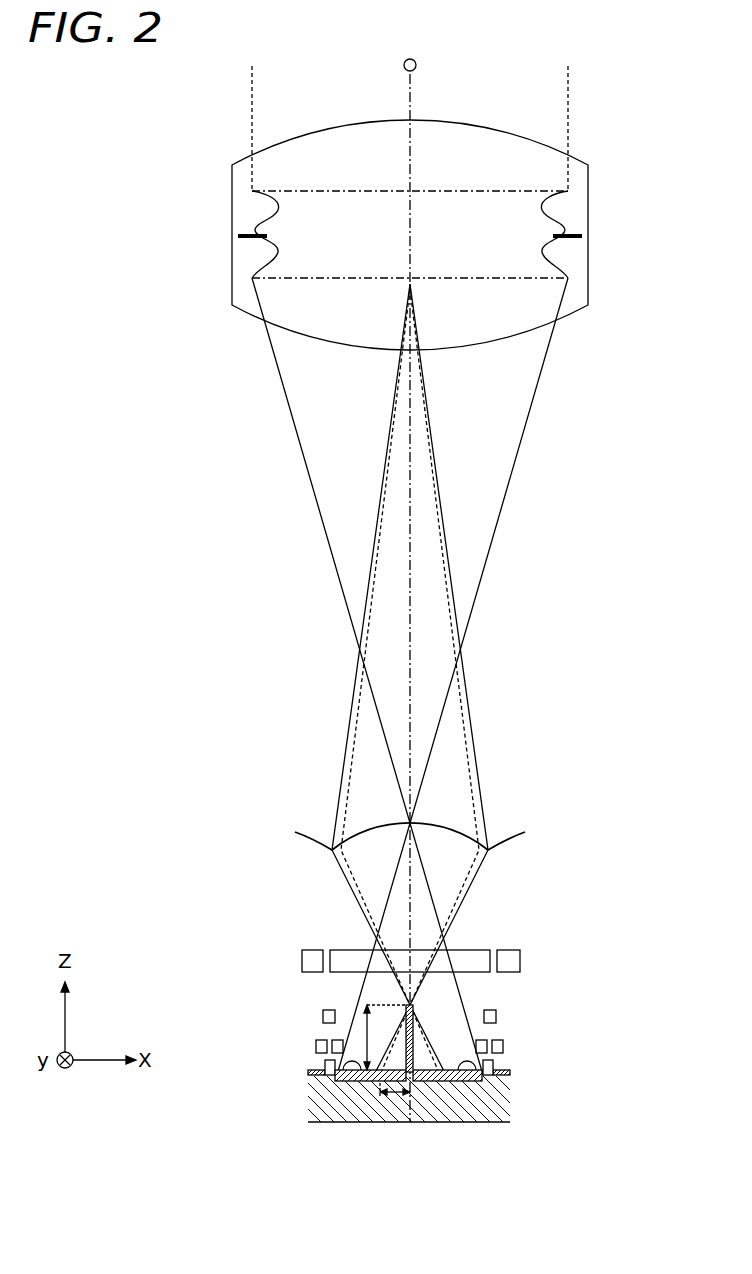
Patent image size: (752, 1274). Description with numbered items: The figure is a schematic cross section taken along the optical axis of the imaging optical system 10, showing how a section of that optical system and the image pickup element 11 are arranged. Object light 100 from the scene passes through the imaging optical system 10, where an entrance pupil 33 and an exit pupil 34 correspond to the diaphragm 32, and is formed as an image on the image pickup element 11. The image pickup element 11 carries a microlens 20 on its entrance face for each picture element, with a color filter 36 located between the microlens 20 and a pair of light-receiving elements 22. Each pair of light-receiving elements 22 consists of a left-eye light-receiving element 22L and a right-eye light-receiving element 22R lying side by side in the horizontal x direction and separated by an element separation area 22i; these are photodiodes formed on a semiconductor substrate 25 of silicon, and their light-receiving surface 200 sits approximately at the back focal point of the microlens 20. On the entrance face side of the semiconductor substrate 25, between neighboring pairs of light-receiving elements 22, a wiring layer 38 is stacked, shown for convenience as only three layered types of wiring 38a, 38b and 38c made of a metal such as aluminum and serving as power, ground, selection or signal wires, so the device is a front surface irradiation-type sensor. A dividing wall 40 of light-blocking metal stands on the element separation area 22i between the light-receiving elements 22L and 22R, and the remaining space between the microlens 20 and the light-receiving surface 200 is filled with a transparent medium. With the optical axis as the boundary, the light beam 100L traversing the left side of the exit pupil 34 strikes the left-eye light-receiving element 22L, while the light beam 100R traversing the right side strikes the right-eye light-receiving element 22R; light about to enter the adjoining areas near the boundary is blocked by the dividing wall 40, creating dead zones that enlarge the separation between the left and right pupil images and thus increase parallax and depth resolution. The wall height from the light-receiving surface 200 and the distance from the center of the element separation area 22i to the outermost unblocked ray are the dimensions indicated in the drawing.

The object light 100 is at (575, 50).
The light beam traversing the left-side pupil 100L is at (347, 103).
The light beam traversing the right-side pupil 100R is at (520, 103).
The imaging optical system 10 is at (222, 250).
The diaphragm 32 is at (250, 230).
The entrance pupil 33 is at (462, 191).
The exit pupil 34 is at (452, 279).
The microlens 20 is at (380, 827).
The image pickup element 11 is at (512, 904).
The color filter 36 is at (360, 952).
The wiring layer 38 is at (237, 962).
The wiring 38a is at (324, 1010).
The wiring 38b is at (323, 1040).
The wiring 38c is at (316, 1047).
The dividing wall 40 is at (415, 1043).
The pair of light-receiving elements 22 is at (463, 1176).
The right-eye light-receiving element 22R is at (367, 1083).
The left-eye light-receiving element 22L is at (453, 1083).
The element separation area 22i is at (308, 1072).
The semiconductor substrate 25 is at (318, 1100).
The light-receiving surface 200 is at (343, 1081).